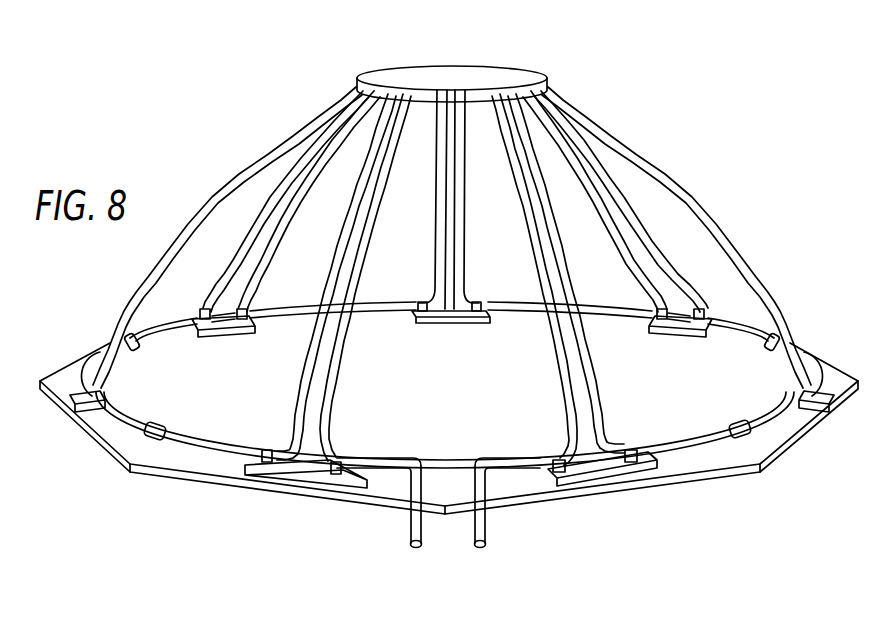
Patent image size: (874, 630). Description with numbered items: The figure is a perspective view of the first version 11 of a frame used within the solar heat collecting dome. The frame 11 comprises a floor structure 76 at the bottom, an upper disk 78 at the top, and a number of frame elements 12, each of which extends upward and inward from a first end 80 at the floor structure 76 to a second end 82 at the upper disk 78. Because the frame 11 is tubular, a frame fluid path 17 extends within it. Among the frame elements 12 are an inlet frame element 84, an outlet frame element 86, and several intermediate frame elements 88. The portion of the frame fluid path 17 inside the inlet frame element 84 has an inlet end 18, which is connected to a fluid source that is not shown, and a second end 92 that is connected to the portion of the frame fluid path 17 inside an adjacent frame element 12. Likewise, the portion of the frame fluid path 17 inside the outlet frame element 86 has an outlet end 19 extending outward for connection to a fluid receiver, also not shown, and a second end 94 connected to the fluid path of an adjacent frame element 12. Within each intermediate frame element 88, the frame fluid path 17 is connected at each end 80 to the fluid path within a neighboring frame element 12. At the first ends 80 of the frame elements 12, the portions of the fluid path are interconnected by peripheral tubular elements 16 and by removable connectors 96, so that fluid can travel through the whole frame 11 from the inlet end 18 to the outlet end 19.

The first version of a frame 11 is at (255, 108).
The frame element 12 is at (468, 172).
The peripheral tubular element 16 is at (684, 455).
The frame fluid path 17 is at (411, 549).
The inlet end 18 is at (410, 523).
The outlet end 19 is at (489, 528).
The floor structure 76 is at (718, 478).
The upper disk 78 is at (522, 75).
The first end 80 is at (428, 300).
The second end 82 is at (552, 92).
The inlet frame element 84 is at (338, 398).
The outlet frame element 86 is at (558, 398).
The intermediate frame element 88 is at (432, 172).
The second end 92 is at (275, 478).
The second end 94 is at (610, 450).
The removable connector 96 is at (146, 440).